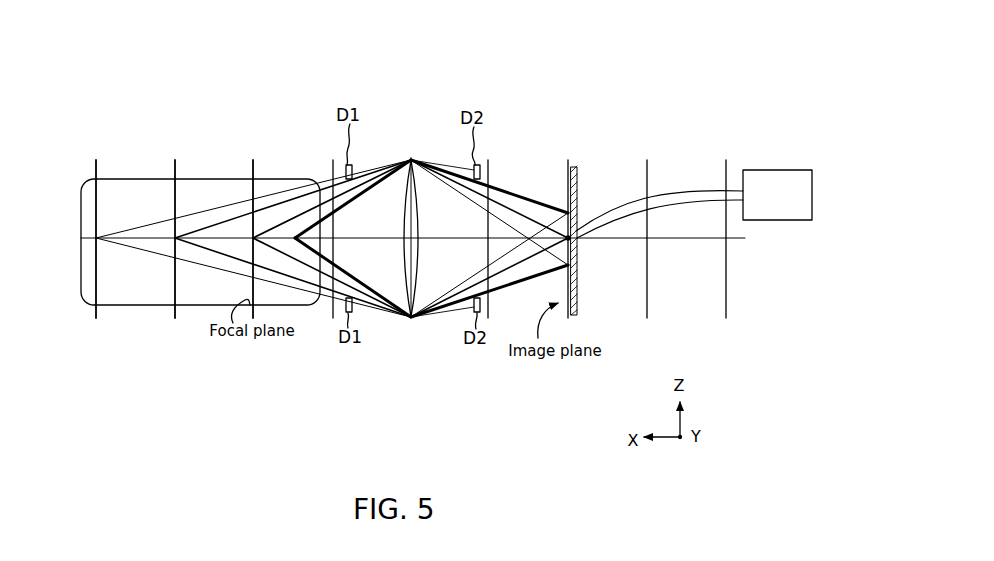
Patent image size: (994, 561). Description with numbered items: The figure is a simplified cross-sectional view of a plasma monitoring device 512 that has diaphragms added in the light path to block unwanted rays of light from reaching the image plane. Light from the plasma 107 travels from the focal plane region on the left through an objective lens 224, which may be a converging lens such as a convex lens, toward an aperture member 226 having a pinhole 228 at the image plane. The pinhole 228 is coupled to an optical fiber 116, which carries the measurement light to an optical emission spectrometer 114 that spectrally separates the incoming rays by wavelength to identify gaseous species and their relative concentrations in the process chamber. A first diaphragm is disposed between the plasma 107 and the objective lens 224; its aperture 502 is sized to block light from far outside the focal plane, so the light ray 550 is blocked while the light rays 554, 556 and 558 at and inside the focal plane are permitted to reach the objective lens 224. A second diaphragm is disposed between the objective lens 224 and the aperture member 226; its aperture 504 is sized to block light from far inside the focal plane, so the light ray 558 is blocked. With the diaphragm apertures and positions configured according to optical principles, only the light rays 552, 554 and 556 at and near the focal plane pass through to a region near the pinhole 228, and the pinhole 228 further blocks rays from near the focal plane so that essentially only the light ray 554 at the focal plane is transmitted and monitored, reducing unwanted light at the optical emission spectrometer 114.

The plasma 107 is at (147, 179).
The light ray 550 is at (143, 222).
The light ray 552 is at (212, 225).
The light ray 554 is at (265, 222).
The light ray 556 is at (303, 223).
The light ray 558 is at (457, 168).
The plasma monitoring device 512 is at (414, 92).
The aperture member 226 is at (573, 165).
The pinhole 228 is at (562, 215).
The optical fiber 116 is at (693, 190).
The optical emission spectrometer 114 is at (781, 170).
The objective lens 224 is at (412, 320).
The aperture 502 is at (370, 255).
The aperture 504 is at (450, 255).